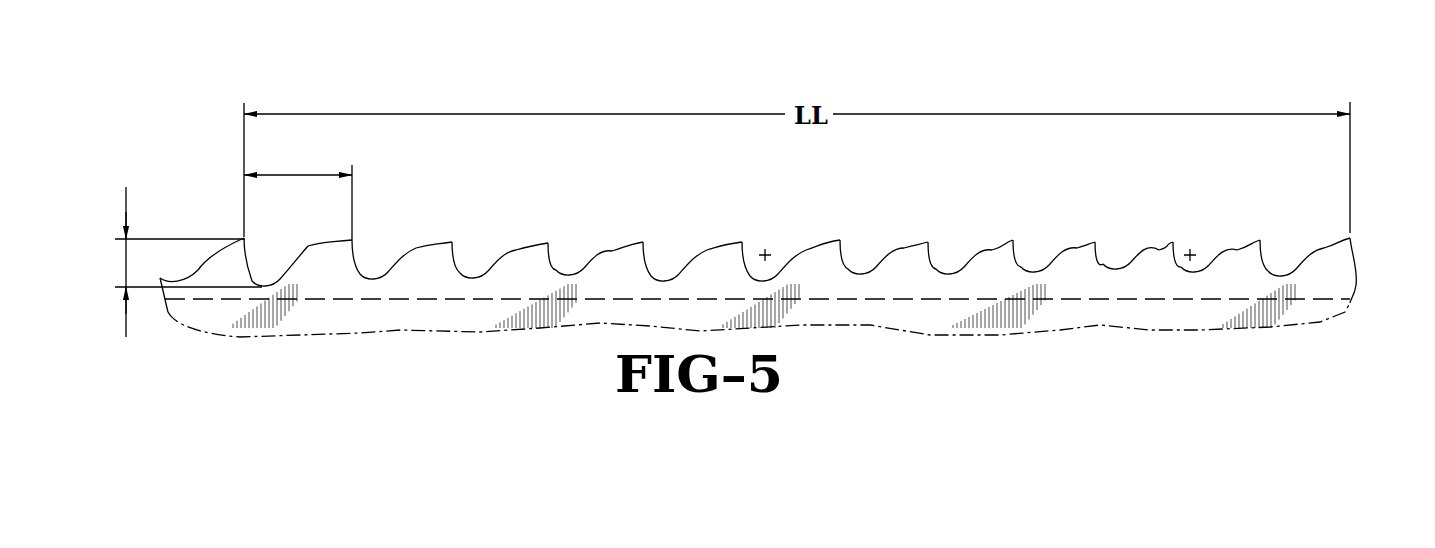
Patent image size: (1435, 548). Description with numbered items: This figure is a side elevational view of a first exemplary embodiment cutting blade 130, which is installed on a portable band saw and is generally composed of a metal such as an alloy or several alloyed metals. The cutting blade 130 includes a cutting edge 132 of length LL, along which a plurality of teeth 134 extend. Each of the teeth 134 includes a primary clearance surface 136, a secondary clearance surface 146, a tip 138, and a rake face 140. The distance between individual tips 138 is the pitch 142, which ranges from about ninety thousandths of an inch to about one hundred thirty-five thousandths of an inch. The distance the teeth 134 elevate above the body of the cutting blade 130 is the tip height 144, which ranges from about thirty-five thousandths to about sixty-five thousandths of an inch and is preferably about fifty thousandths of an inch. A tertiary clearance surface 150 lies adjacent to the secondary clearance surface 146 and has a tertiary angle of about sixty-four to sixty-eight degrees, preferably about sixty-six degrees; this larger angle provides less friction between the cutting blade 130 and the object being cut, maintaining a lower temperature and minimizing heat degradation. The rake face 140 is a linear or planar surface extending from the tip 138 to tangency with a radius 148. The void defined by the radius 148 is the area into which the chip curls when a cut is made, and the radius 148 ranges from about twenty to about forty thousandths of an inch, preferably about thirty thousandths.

The cutting blade 130 is at (203, 188).
The cutting edge 132 is at (1362, 258).
The teeth 134 is at (642, 241).
The primary clearance surface 136 is at (540, 243).
The tip 138 is at (452, 241).
The rake face 140 is at (647, 256).
The pitch 142 is at (301, 175).
The tip height 144 is at (123, 260).
The secondary clearance surface 146 is at (512, 251).
The radius 148 is at (742, 313).
The tertiary clearance surface 150 is at (598, 257).